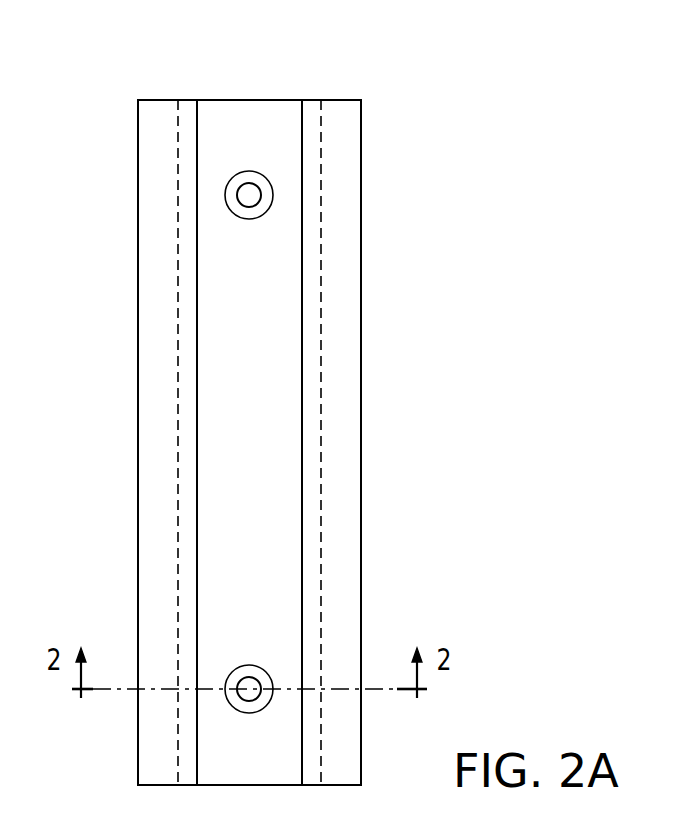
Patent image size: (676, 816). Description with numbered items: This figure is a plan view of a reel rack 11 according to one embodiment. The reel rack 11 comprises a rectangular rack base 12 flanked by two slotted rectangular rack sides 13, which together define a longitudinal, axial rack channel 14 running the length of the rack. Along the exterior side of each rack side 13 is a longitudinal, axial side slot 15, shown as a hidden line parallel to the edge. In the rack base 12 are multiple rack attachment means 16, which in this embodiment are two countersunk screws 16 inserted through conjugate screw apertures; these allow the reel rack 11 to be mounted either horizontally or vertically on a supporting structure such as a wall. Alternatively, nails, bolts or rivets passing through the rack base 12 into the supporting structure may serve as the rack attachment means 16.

The reel rack 11 is at (404, 117).
The rack base 12 is at (239, 117).
The rack sides 13 is at (155, 183).
The rack channel 14 is at (262, 338).
The side slot 15 is at (178, 275).
The rack attachment means 16 is at (272, 169).